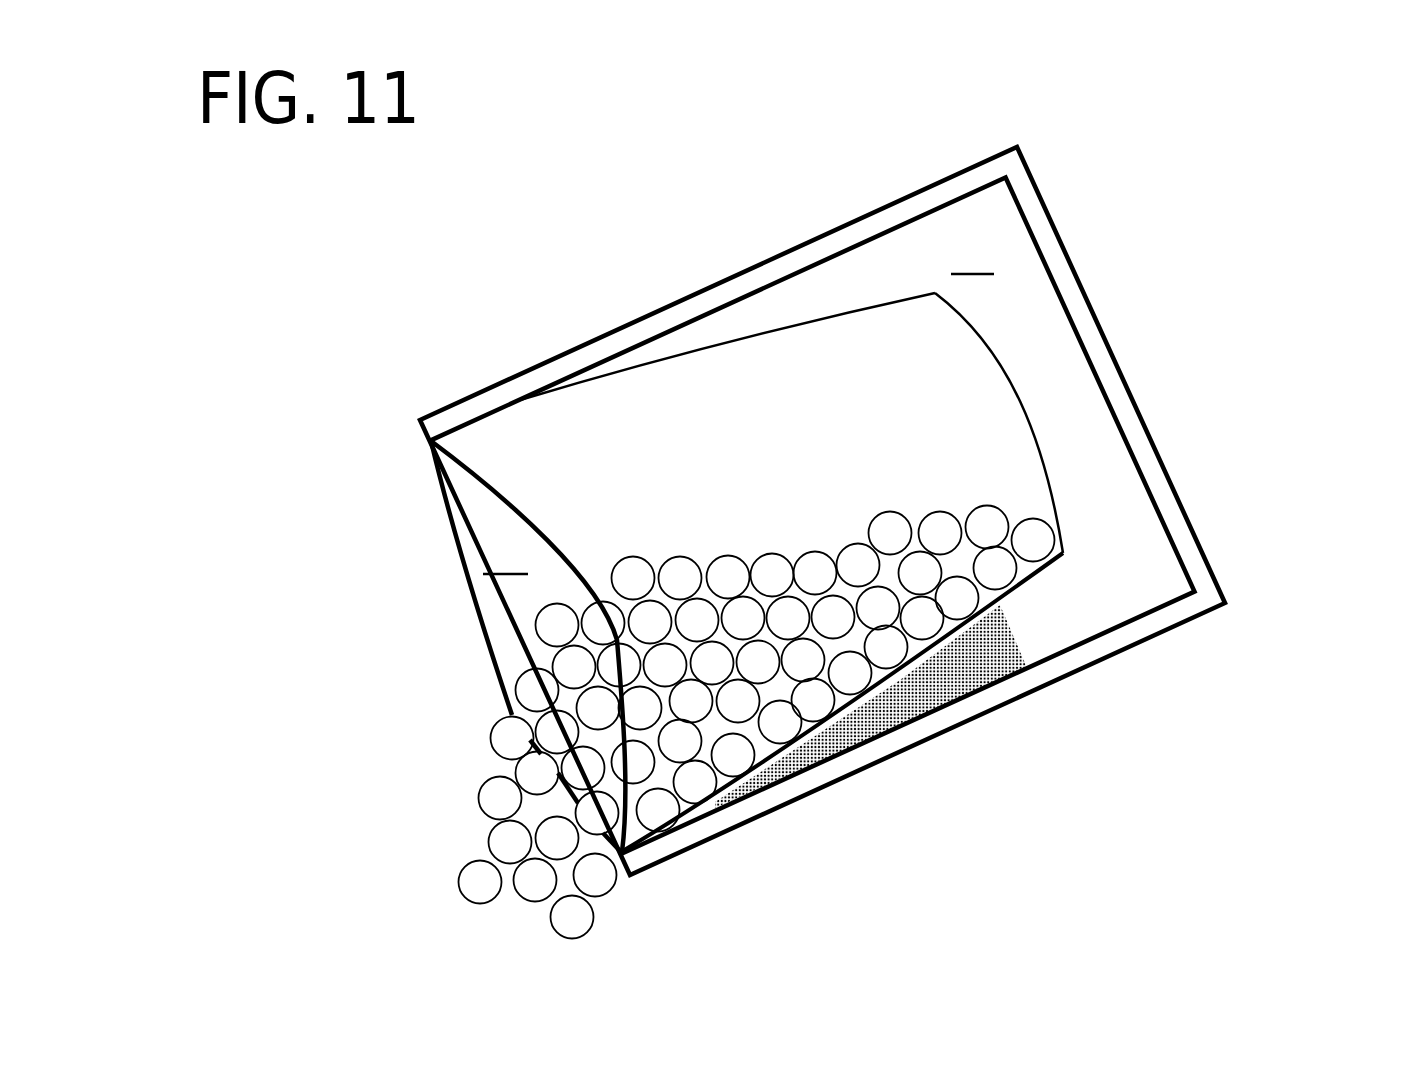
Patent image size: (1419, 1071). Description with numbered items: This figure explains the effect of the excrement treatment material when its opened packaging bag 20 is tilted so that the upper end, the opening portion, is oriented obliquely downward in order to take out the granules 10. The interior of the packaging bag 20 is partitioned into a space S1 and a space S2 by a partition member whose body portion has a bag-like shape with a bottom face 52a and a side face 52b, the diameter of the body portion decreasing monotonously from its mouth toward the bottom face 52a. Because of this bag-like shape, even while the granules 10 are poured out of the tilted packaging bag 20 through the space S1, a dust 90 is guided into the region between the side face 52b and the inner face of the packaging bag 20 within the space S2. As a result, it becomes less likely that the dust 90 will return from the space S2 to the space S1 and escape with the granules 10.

The granules 10 is at (580, 917).
The packaging bag 20 is at (718, 282).
The bottom face 52a is at (1022, 405).
The side face 52b is at (1017, 583).
The dust 90 is at (927, 680).
The space S1 is at (505, 551).
The space S2 is at (972, 252).